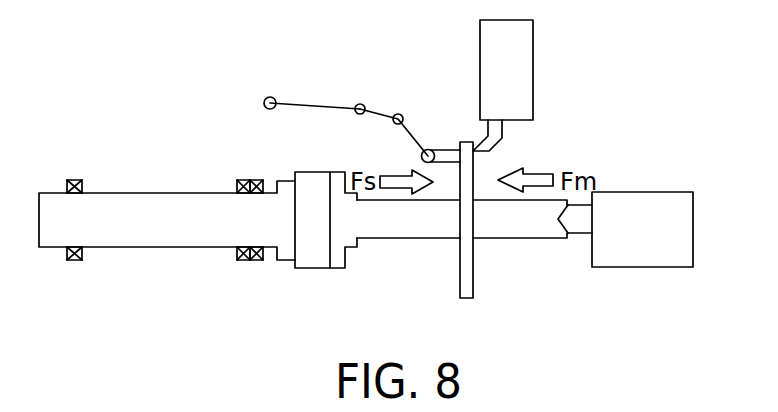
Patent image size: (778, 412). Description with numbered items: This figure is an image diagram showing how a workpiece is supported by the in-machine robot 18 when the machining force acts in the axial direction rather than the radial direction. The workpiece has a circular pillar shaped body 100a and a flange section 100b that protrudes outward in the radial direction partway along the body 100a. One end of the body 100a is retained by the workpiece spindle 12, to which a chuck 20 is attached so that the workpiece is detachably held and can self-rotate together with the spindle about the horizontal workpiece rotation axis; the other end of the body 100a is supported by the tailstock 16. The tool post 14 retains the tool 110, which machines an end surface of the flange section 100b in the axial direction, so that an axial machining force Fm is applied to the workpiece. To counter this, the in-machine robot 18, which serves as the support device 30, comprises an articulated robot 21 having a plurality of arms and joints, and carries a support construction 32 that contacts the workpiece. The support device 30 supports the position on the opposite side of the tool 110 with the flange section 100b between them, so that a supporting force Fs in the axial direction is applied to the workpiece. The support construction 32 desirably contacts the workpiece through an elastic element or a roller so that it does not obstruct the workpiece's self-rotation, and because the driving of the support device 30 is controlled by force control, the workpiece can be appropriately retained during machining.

The workpiece spindle 12 is at (158, 247).
The tool post 14 is at (533, 33).
The tailstock 16 is at (648, 252).
The in-machine robot 18 is at (314, 75).
The support device 30 is at (327, 87).
The chuck 20 is at (335, 268).
The articulated robot 21 is at (372, 103).
The support construction 32 is at (441, 150).
The body 100a is at (397, 238).
The flange section 100b is at (473, 272).
The tool 110 is at (503, 137).